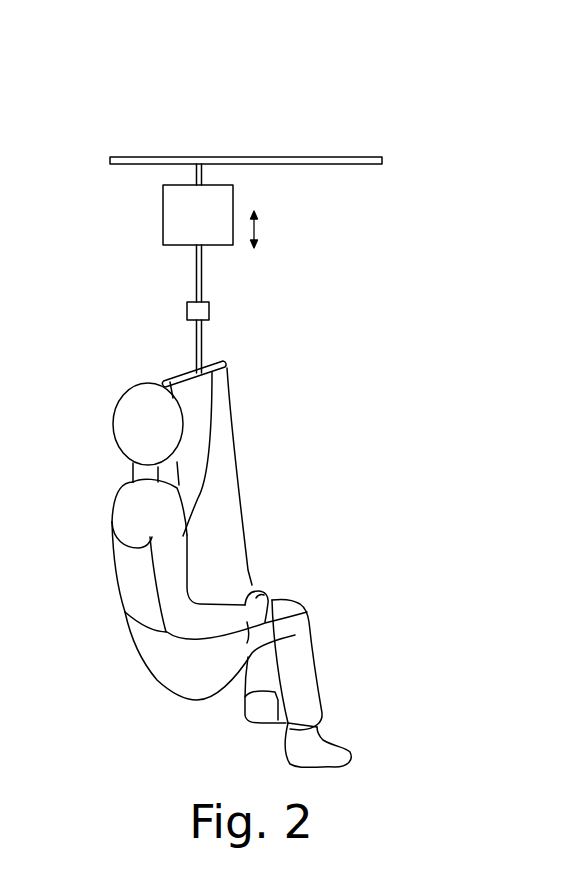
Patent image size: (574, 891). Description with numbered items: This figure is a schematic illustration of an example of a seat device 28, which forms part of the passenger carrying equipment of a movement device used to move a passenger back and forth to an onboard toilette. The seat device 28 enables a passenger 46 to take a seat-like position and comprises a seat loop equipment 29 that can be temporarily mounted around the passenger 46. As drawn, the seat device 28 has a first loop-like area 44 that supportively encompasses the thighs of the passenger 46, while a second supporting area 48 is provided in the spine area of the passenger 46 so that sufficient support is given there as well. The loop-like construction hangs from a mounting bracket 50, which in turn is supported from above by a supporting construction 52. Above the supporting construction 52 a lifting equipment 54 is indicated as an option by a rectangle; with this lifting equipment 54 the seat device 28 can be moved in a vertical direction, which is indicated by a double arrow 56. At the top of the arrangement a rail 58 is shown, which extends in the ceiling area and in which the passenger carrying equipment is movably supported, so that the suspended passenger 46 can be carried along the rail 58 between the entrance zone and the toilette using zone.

The seat device 28 is at (243, 508).
The seat loop equipment 29 is at (118, 612).
The first loop-like area 44 is at (307, 612).
The passenger 46 is at (134, 503).
The second supporting area 48 is at (117, 548).
The mounting bracket 50 is at (213, 362).
The supporting construction 52 is at (196, 275).
The lifting equipment 54 is at (216, 184).
The double arrow 56 is at (257, 222).
The rail 58 is at (139, 157).